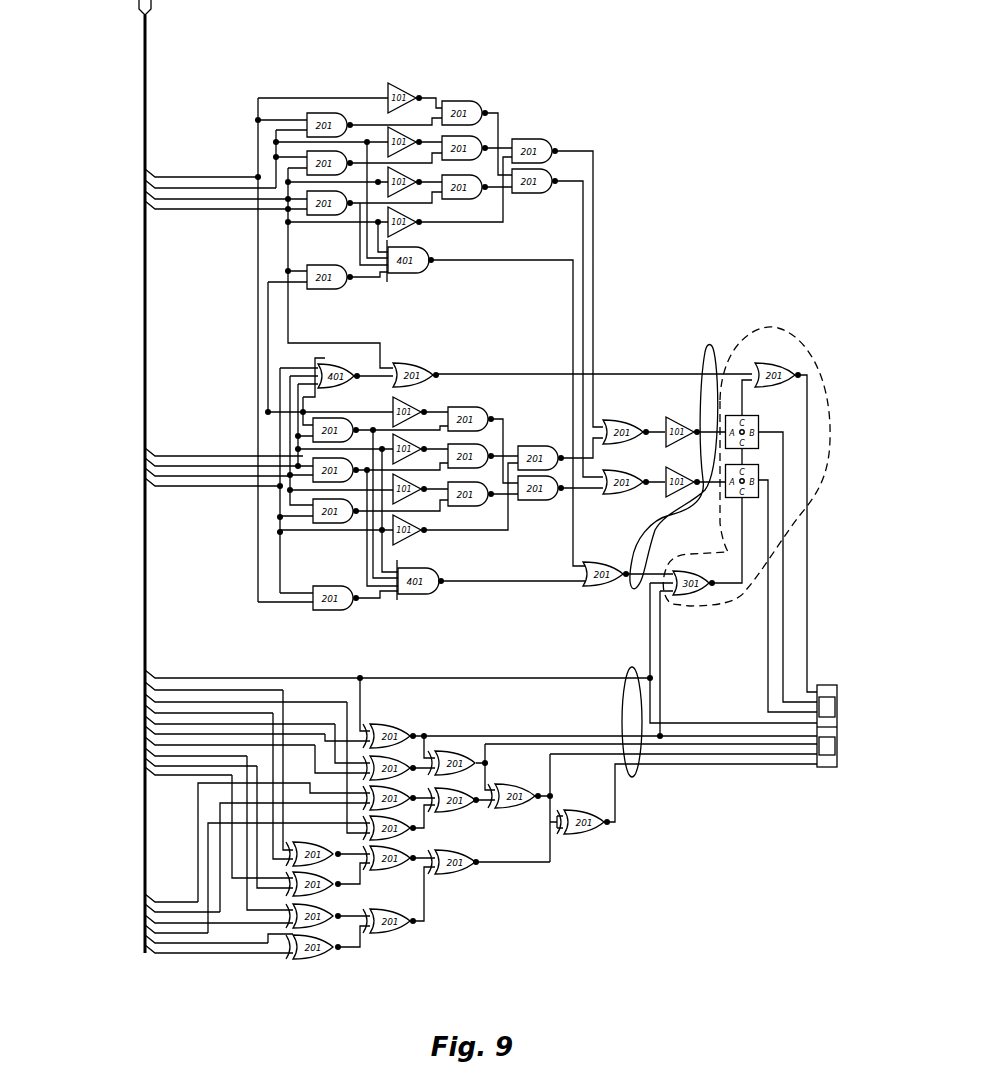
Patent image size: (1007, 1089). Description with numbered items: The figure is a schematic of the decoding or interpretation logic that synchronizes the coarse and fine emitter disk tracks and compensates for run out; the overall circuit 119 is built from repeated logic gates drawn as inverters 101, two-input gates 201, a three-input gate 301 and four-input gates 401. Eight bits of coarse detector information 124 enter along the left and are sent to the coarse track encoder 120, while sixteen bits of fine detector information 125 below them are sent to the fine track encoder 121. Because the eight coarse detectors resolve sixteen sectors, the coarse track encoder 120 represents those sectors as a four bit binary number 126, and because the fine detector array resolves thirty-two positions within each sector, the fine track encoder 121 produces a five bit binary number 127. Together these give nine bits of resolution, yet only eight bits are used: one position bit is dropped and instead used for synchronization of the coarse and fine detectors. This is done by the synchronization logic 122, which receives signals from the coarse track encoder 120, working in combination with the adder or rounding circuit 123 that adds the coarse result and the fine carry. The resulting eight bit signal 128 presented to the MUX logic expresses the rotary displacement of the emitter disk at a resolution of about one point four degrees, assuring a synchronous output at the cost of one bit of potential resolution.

The inverter 101 is at (544, 314).
The two-input logic gate (AND / OR / XOR) 201 is at (543, 530).
The three-input OR gate 301 is at (694, 583).
The four-input logic gate 401 is at (381, 420).
The encoder logic circuit 119 is at (678, 122).
The coarse track encoder 120 is at (503, 350).
The fine track encoder 121 is at (430, 830).
The synchronization logic 122 is at (657, 511).
The rounding circuit (adder) 123 is at (828, 395).
The eight bits of coarse detector information 124 is at (135, 490).
The sixteen bits of fine detector information 125 is at (138, 973).
The four bit binary number 126 is at (708, 342).
The five bit binary number 127 is at (632, 667).
The eight bit output signal 128 is at (825, 747).